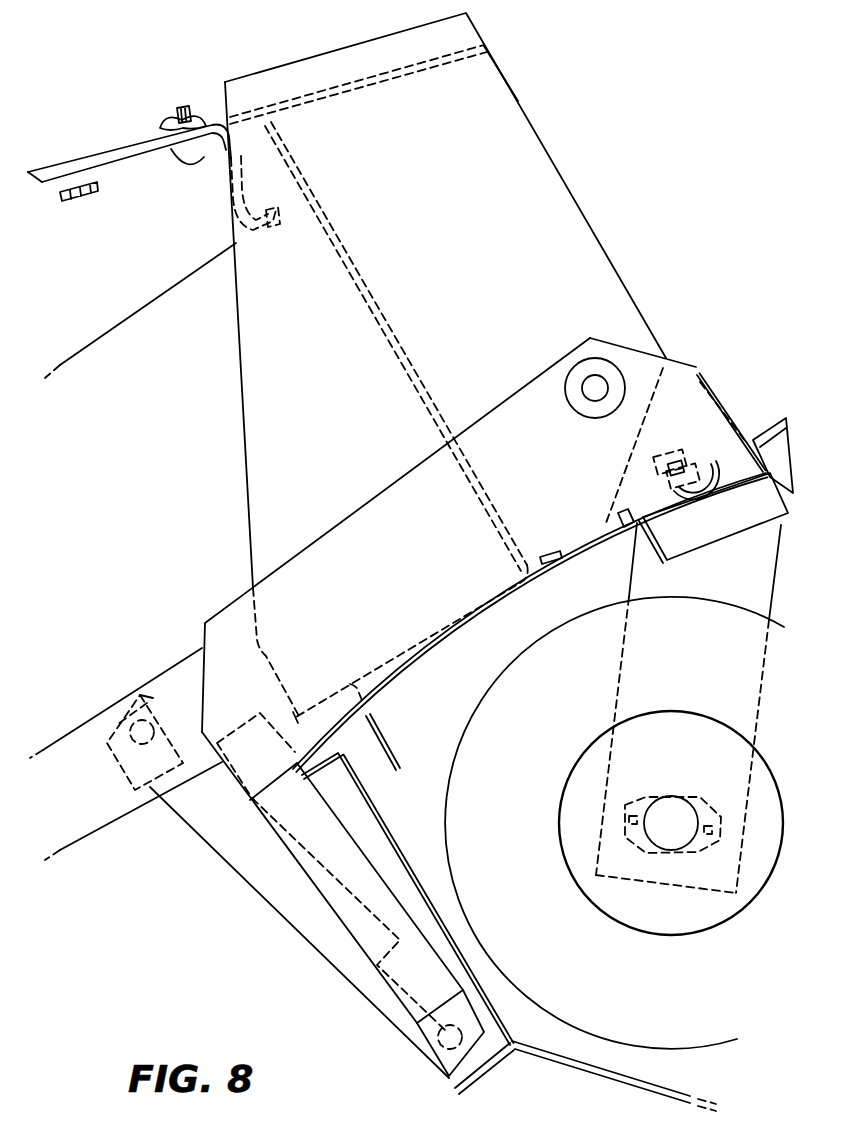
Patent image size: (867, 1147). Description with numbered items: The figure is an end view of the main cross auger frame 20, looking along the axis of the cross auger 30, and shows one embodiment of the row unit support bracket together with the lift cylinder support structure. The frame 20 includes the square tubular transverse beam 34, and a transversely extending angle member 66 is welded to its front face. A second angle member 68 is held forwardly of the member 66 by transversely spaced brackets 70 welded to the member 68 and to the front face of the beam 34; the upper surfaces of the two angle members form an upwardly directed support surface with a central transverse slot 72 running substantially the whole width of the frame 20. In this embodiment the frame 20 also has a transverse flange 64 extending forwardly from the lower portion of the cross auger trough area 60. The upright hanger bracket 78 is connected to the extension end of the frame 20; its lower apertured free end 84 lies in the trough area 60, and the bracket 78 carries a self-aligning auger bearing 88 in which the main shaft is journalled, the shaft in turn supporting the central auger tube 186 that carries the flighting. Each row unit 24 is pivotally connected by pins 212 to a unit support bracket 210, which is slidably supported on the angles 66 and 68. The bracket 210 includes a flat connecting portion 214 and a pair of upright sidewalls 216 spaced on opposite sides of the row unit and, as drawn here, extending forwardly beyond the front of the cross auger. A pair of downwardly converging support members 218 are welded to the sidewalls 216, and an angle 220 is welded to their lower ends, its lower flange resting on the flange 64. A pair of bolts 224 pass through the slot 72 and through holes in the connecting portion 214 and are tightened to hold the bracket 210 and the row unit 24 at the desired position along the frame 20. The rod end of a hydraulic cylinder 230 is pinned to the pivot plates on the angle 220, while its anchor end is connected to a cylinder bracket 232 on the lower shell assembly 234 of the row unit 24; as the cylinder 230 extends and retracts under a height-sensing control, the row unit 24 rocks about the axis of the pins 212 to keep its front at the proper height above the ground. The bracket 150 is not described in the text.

The main cross auger frame 20 is at (738, 346).
The row unit 24 is at (116, 124).
The cross auger 30 is at (449, 757).
The square tubular transverse beam 34 is at (781, 420).
The cross auger trough area 60 is at (433, 724).
The transverse flange 64 is at (486, 1070).
The angle member 66 is at (749, 440).
The second angle member 68 is at (618, 522).
The brackets 70 is at (751, 523).
The central transverse slot 72 is at (663, 482).
The upright hanger bracket 78 is at (634, 576).
The lower apertured free end 84 is at (673, 887).
The self-aligning auger bearing 88 is at (645, 797).
The L-shaped bracket 150 is at (430, 808).
The central auger tube 186 is at (571, 775).
The unit support bracket 210 is at (685, 360).
The pins 212 is at (596, 397).
The flat connecting portion 214 is at (703, 449).
The upright sidewalls 216 is at (400, 481).
The downwardly converging support members 218 is at (350, 933).
The angle 220 is at (449, 1077).
The bolts 224 is at (663, 448).
The hydraulic cylinder 230 is at (247, 882).
The cylinder bracket 232 is at (133, 787).
The lower shell assembly 234 is at (115, 828).